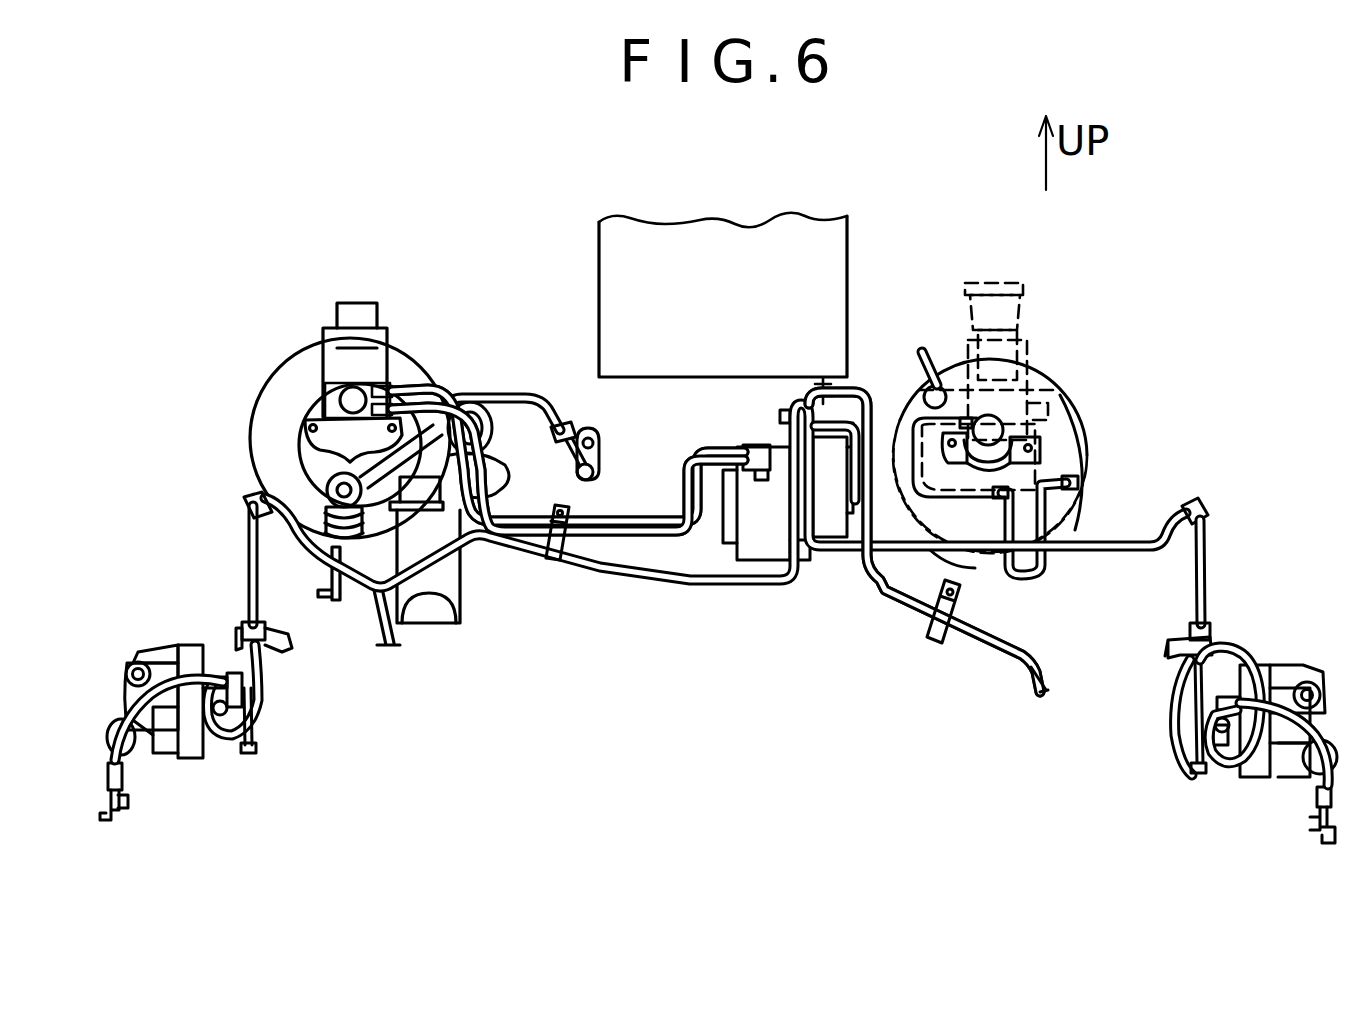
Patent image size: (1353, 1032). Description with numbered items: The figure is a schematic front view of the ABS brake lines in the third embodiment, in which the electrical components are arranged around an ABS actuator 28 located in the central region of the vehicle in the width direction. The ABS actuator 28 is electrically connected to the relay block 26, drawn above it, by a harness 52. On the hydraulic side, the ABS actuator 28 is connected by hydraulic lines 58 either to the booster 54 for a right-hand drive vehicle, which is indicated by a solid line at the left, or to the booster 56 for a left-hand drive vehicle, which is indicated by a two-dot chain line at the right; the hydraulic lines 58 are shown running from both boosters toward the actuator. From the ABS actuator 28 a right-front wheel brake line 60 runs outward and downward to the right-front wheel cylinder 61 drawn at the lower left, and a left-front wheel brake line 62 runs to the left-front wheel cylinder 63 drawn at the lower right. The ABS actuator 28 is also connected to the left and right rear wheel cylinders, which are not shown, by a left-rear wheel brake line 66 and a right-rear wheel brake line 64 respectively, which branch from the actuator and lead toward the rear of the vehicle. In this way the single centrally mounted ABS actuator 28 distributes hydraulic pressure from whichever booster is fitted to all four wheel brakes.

The relay block 26 is at (849, 260).
The ABS actuator 28 is at (800, 563).
The harness 52 is at (836, 400).
The booster 54 is at (302, 352).
The booster 56 is at (1050, 364).
The hydraulic lines 58 is at (450, 390).
The right-front wheel brake line 60 is at (247, 542).
The right-front wheel cylinder 61 is at (187, 748).
The left-front wheel brake line 62 is at (1208, 595).
The left-front wheel cylinder 63 is at (1257, 772).
The right-rear wheel brake line 64 is at (1026, 682).
The left-rear wheel brake line 66 is at (1041, 688).